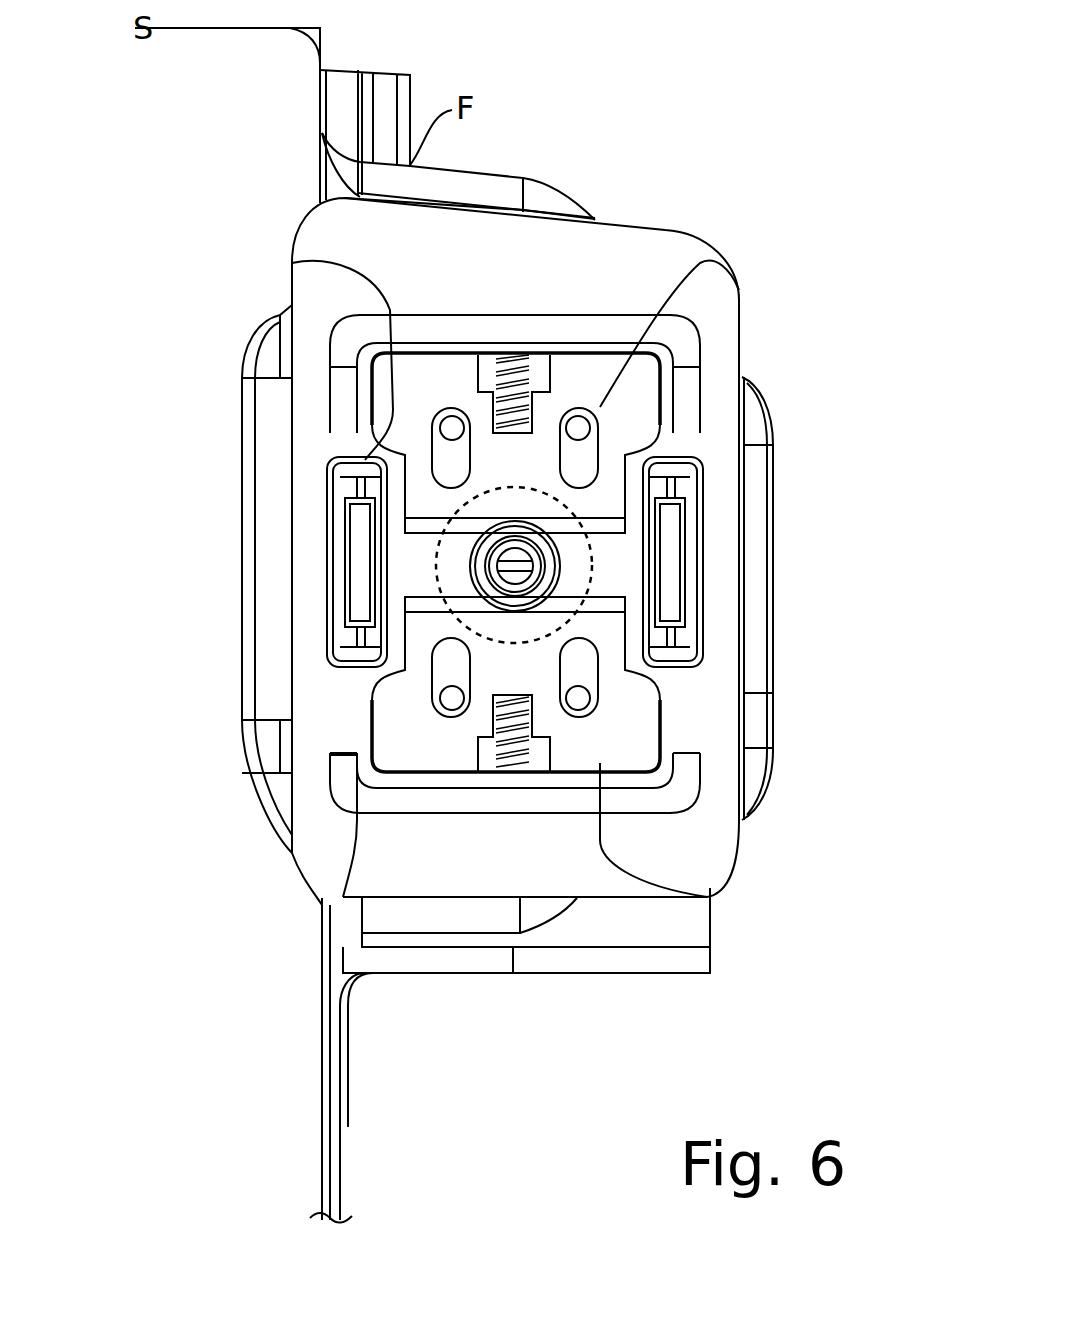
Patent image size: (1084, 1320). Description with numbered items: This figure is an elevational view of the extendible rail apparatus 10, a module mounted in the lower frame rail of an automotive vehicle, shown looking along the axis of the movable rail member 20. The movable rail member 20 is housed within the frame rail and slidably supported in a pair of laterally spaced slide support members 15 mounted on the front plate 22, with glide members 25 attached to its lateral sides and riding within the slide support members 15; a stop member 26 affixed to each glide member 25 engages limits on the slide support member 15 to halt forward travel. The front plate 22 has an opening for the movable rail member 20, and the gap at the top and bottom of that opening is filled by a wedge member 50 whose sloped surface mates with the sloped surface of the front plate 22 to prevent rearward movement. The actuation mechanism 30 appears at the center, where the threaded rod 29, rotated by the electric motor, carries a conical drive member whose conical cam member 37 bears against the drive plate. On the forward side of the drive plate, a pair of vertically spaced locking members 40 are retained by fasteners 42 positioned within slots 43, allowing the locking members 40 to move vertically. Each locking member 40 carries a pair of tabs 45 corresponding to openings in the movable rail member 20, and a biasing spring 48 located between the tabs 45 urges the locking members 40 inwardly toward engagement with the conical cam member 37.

The extendible rail apparatus 10 is at (657, 148).
The actuation mechanism 30 is at (282, 215).
The wedge member 50 is at (363, 337).
The movable rail member 20 is at (712, 435).
The front plate 22 is at (645, 905).
The tabs 45 is at (380, 335).
The locking members 40 is at (415, 480).
The slots 43 is at (583, 437).
The fasteners 42 is at (578, 430).
The biasing spring 48 is at (530, 362).
The threaded rod 29 is at (547, 553).
The conical cam member 37 is at (480, 588).
The slide support members 15 is at (345, 553).
The glide members 25 is at (345, 630).
The stop member 26 is at (357, 493).